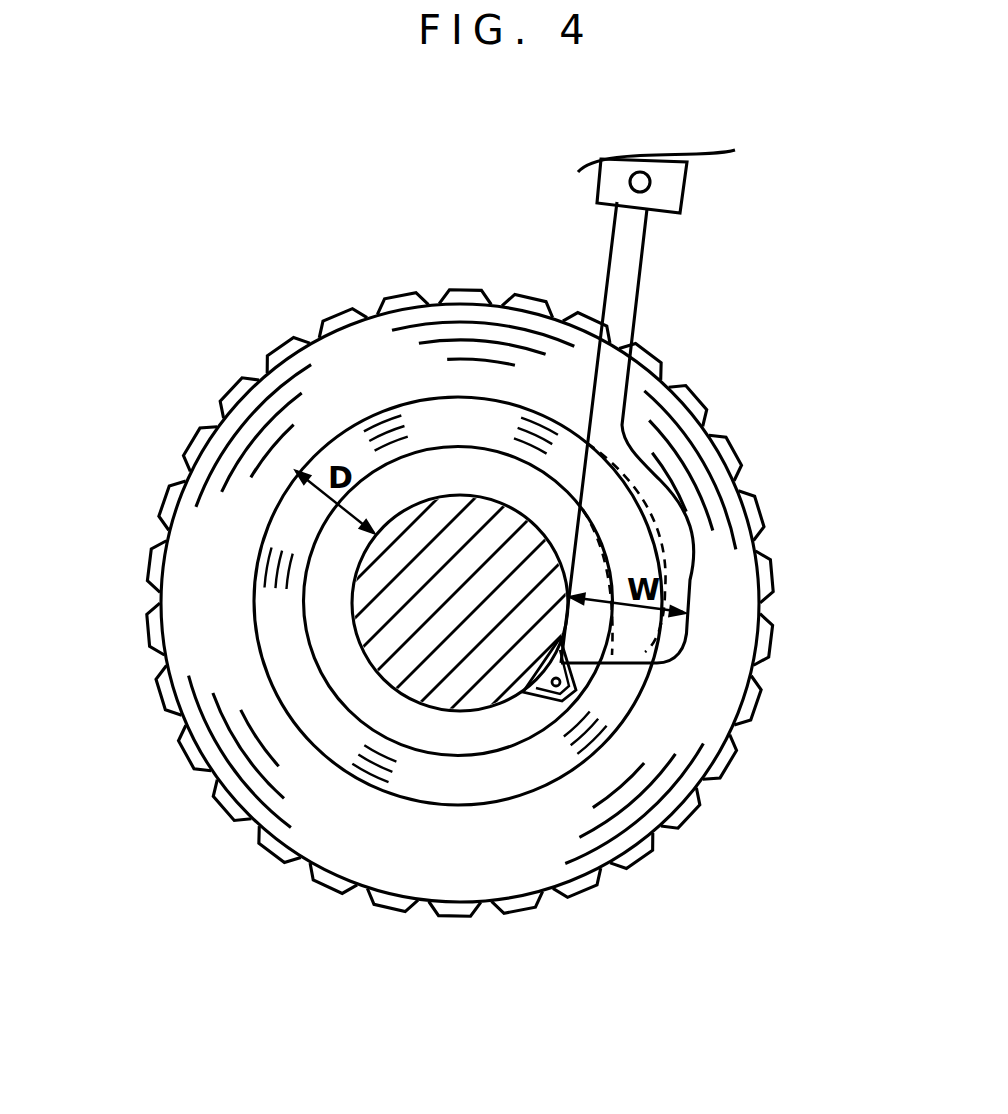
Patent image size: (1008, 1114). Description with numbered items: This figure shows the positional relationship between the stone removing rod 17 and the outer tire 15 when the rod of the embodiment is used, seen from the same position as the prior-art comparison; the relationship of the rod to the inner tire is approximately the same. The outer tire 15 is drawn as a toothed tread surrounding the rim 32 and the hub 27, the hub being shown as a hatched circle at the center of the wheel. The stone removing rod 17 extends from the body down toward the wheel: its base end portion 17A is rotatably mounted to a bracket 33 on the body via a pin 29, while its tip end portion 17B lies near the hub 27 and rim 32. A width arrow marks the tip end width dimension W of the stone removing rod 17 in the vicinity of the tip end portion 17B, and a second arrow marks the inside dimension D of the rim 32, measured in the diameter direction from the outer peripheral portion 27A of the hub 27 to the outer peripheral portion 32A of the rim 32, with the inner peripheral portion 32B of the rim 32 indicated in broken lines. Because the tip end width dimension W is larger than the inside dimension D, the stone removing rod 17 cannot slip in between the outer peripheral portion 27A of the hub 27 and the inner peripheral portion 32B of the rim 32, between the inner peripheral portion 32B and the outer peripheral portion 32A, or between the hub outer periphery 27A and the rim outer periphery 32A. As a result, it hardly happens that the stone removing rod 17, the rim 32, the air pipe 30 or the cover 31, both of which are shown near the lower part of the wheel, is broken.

The outer tire 15 is at (770, 368).
The stone removing rod 17 is at (647, 263).
The base end portion 17A is at (597, 195).
The tip end portion 17B is at (613, 667).
The hub 27 is at (378, 628).
The outer peripheral portion of the hub 27A is at (370, 645).
The pin 29 is at (652, 183).
The air pipe 30 is at (562, 640).
The cover 31 is at (532, 700).
The rim 32 is at (608, 703).
The outer peripheral portion of the rim 32A is at (652, 650).
The inner peripheral portion of the rim 32B is at (607, 562).
The bracket 33 is at (688, 164).